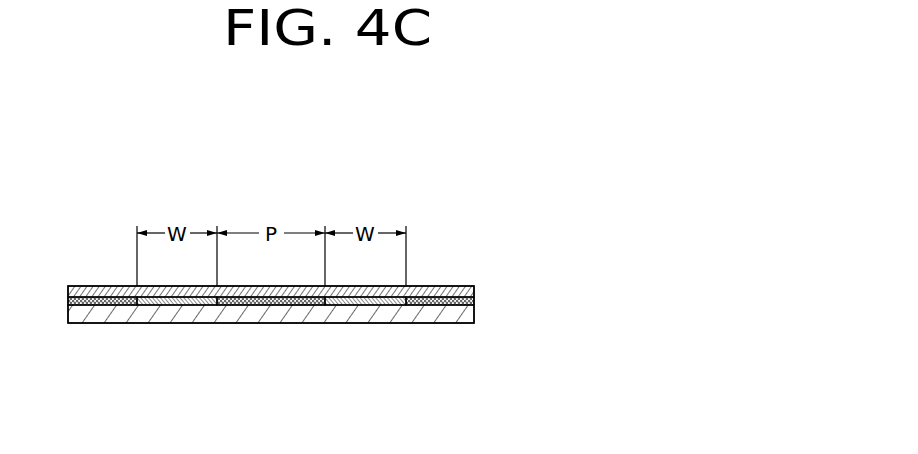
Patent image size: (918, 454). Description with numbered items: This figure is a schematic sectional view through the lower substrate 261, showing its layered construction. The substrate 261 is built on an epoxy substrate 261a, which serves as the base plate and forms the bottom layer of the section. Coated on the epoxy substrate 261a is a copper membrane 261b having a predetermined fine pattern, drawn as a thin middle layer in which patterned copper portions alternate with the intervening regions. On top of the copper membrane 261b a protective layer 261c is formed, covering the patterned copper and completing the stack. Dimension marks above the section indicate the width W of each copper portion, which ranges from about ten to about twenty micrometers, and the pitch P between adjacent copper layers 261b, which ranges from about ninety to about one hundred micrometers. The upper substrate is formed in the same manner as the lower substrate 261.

The lower substrate 261 is at (341, 230).
The epoxy substrate 261a is at (462, 320).
The copper membrane 261b is at (474, 304).
The protective layer 261c is at (470, 290).